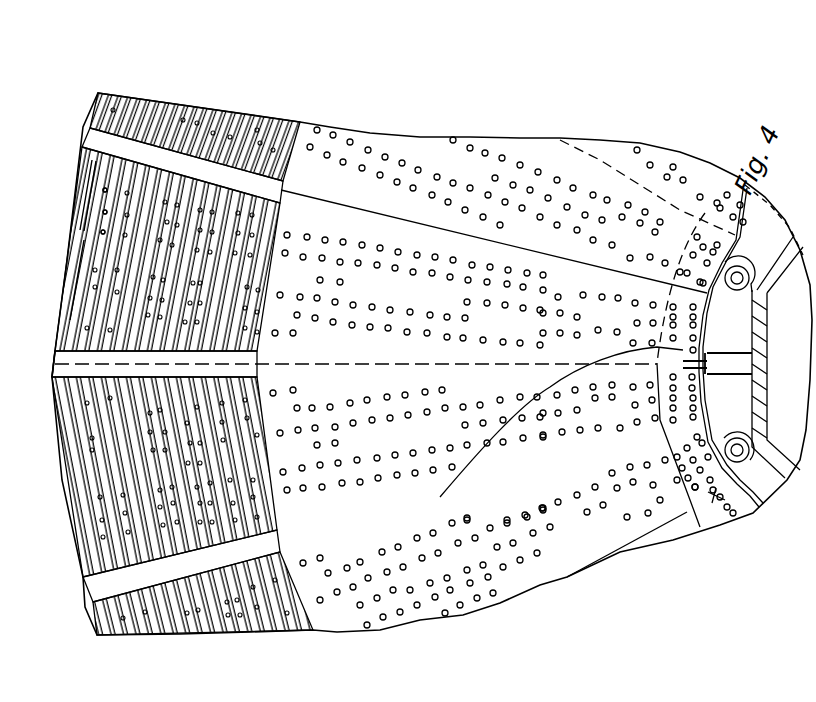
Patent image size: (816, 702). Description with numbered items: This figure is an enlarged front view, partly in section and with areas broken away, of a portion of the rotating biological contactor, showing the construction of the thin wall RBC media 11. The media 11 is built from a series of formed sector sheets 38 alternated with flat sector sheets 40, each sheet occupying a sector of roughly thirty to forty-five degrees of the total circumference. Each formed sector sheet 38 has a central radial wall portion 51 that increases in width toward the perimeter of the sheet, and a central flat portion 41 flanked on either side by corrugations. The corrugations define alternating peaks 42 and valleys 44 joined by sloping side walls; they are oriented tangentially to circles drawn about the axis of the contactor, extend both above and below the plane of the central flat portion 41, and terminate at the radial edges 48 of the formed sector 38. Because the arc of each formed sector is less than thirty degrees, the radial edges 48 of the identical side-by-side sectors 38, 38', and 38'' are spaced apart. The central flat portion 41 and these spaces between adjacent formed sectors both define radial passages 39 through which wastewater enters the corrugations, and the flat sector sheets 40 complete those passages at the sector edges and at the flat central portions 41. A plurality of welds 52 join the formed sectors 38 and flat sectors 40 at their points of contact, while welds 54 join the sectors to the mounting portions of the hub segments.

The RBC media 11 is at (83, 503).
The formed sector sheet 38 is at (157, 362).
The formed sector sheet 38' is at (172, 112).
The formed sector sheet 38'' is at (175, 599).
The radial passage 39 is at (59, 376).
The flat sector sheet 40 is at (80, 243).
The central flat portion 41 is at (247, 357).
The peak 42 is at (82, 223).
The valley 44 is at (97, 183).
The radial edge 48 is at (90, 130).
The central radial wall portion 51 is at (358, 232).
The weld 52 is at (520, 165).
The weld 54 is at (700, 328).